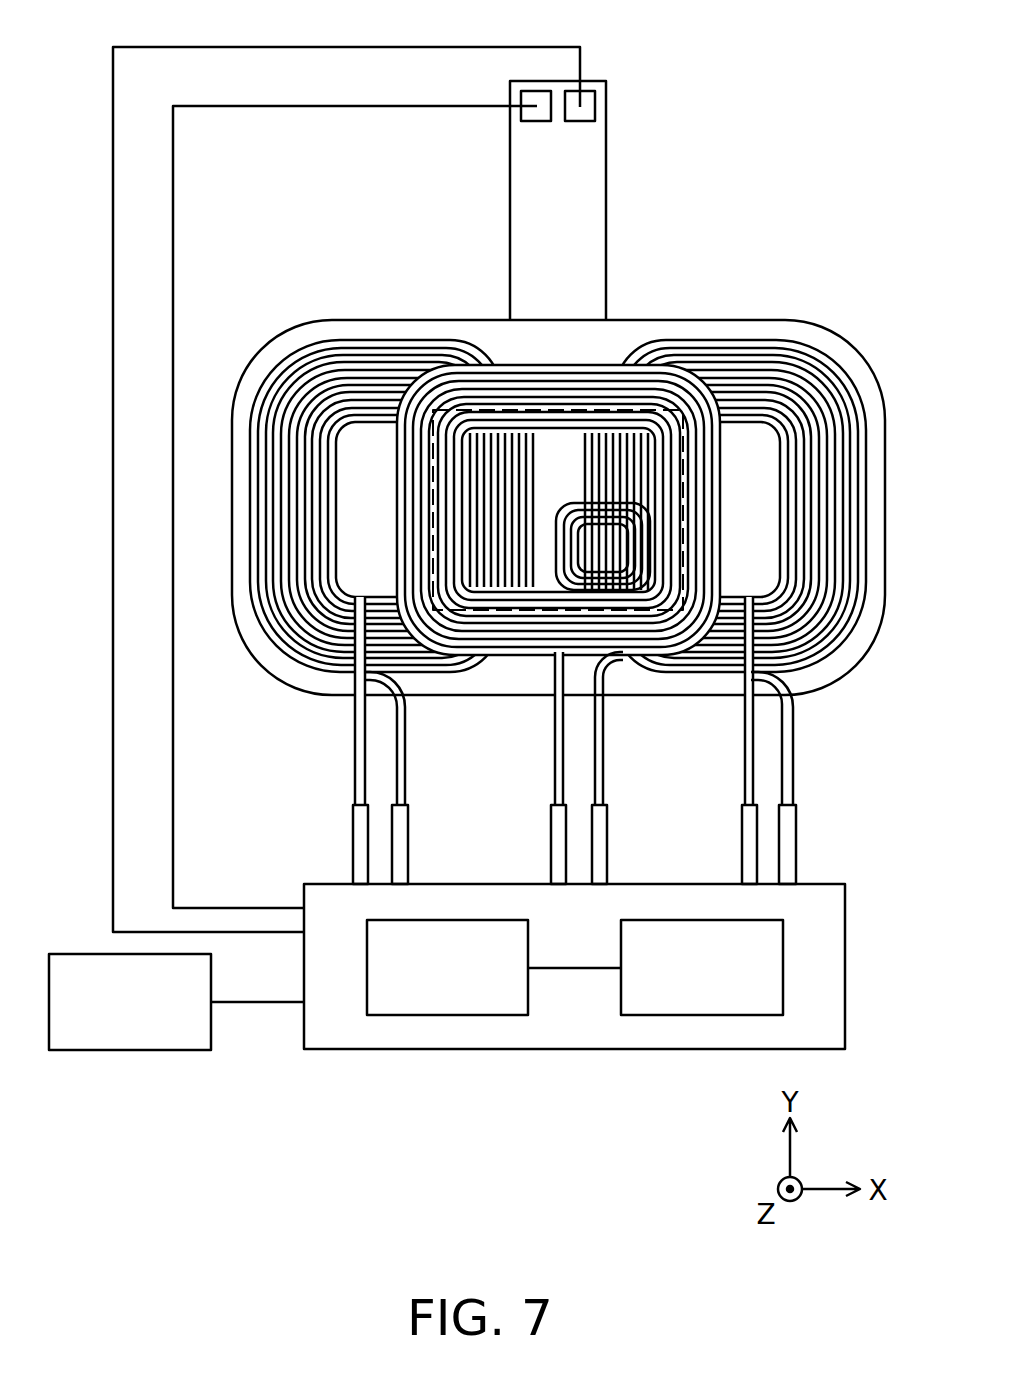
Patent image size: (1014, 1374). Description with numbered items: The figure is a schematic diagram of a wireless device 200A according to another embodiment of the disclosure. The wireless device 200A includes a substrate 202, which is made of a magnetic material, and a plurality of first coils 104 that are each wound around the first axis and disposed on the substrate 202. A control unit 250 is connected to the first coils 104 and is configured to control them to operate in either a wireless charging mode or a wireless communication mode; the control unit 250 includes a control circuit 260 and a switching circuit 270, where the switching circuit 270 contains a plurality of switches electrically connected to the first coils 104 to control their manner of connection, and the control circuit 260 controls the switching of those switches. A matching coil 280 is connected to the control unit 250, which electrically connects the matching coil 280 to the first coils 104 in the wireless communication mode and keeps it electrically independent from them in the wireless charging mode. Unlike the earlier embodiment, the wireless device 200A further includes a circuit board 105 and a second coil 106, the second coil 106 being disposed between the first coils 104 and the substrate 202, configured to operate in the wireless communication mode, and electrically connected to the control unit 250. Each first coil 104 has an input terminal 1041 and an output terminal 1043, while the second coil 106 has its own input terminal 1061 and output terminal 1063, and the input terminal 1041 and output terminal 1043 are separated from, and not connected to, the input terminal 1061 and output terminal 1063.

The wireless device 200A is at (38, 25).
The substrate 202 is at (830, 323).
The first coils 104 is at (401, 359).
The second coil 106 is at (528, 404).
The circuit board 105 is at (590, 184).
The input terminal 1041 is at (357, 757).
The output terminal 1043 is at (402, 757).
The input terminal 1061 is at (178, 817).
The output terminal 1063 is at (113, 817).
The control unit 250 is at (838, 884).
The control circuit 260 is at (421, 984).
The switching circuit 270 is at (676, 984).
The matching coil 280 is at (104, 1019).